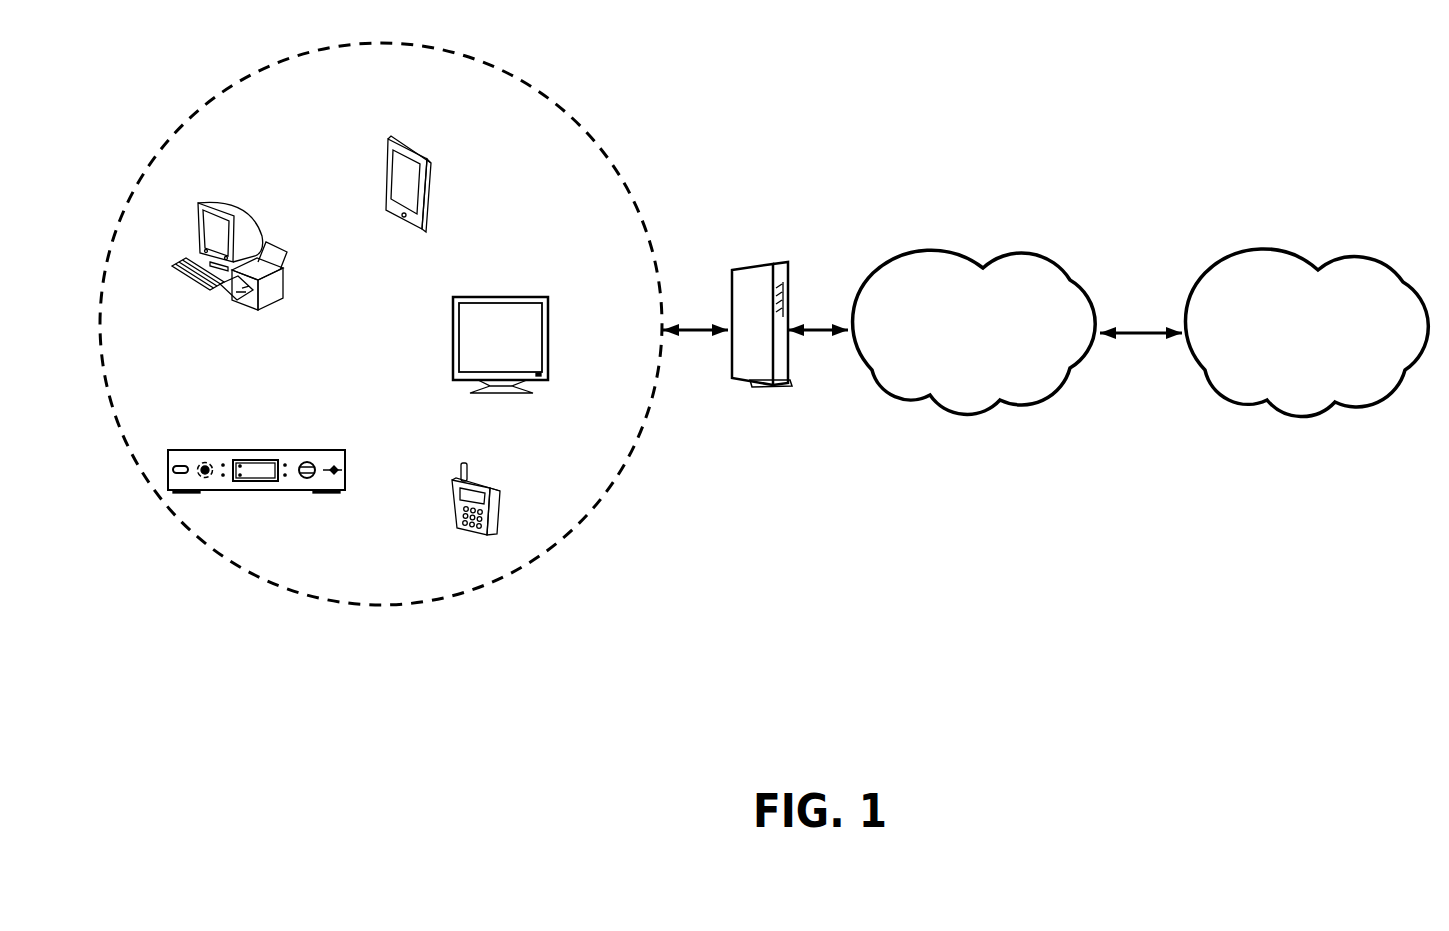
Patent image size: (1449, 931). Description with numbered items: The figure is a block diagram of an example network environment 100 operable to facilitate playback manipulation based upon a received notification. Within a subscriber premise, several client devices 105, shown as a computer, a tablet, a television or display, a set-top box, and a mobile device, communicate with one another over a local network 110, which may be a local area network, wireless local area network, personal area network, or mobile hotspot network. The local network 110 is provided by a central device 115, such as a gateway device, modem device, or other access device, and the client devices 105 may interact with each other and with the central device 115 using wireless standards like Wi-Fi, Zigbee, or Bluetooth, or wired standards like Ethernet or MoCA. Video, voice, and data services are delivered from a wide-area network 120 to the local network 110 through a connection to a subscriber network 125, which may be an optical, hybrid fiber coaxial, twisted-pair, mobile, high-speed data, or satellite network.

The network environment 100 is at (1165, 725).
The client devices 105 is at (253, 223).
The local network 110 is at (592, 132).
The central device 115 is at (757, 263).
The wide-area network 120 is at (1307, 420).
The subscriber network 125 is at (968, 417).